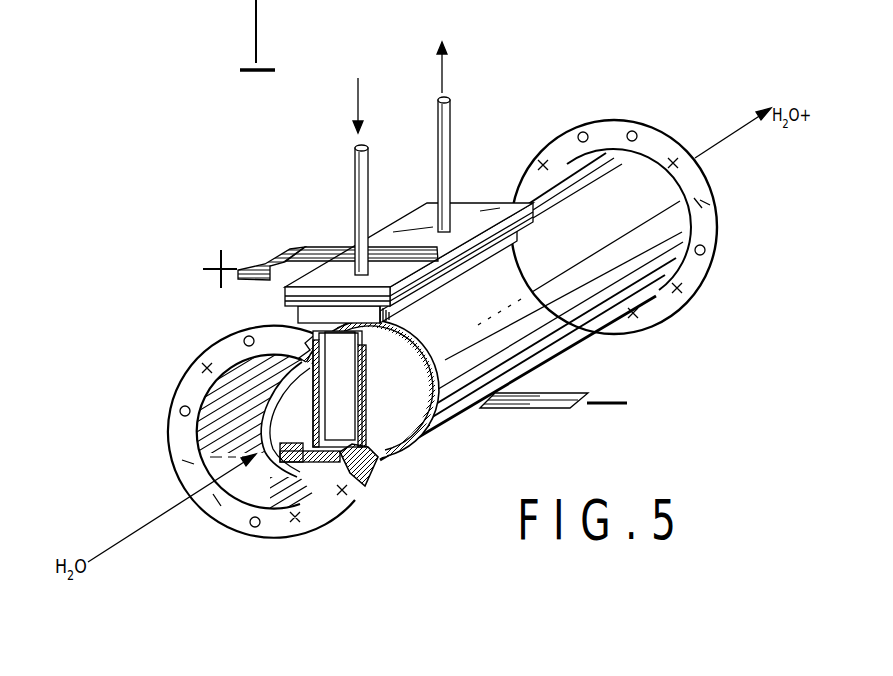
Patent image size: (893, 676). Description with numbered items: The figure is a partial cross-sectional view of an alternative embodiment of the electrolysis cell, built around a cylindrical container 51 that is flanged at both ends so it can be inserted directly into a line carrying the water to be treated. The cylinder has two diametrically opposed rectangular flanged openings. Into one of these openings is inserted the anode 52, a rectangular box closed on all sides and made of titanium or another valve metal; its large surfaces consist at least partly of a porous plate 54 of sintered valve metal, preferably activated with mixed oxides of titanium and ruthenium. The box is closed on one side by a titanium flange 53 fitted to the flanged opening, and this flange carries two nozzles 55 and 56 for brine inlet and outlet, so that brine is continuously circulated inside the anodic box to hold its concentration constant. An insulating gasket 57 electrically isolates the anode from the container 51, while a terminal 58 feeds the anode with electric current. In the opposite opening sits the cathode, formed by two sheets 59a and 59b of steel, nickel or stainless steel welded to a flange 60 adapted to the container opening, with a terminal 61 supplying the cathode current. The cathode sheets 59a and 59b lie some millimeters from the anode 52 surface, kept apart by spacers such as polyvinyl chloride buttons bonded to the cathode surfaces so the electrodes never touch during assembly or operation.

The cylindrical container 51 is at (452, 392).
The anode 52 is at (336, 444).
The titanium flange 53 is at (468, 215).
The porous plate 54 is at (364, 407).
The nozzle 55 is at (355, 167).
The nozzle 56 is at (450, 113).
The insulating gasket 57 is at (290, 300).
The terminal 58 is at (255, 265).
The cathode sheet 59a is at (420, 333).
The cathode sheet 59b is at (358, 486).
The flange 60 is at (290, 480).
The terminal 61 is at (543, 395).